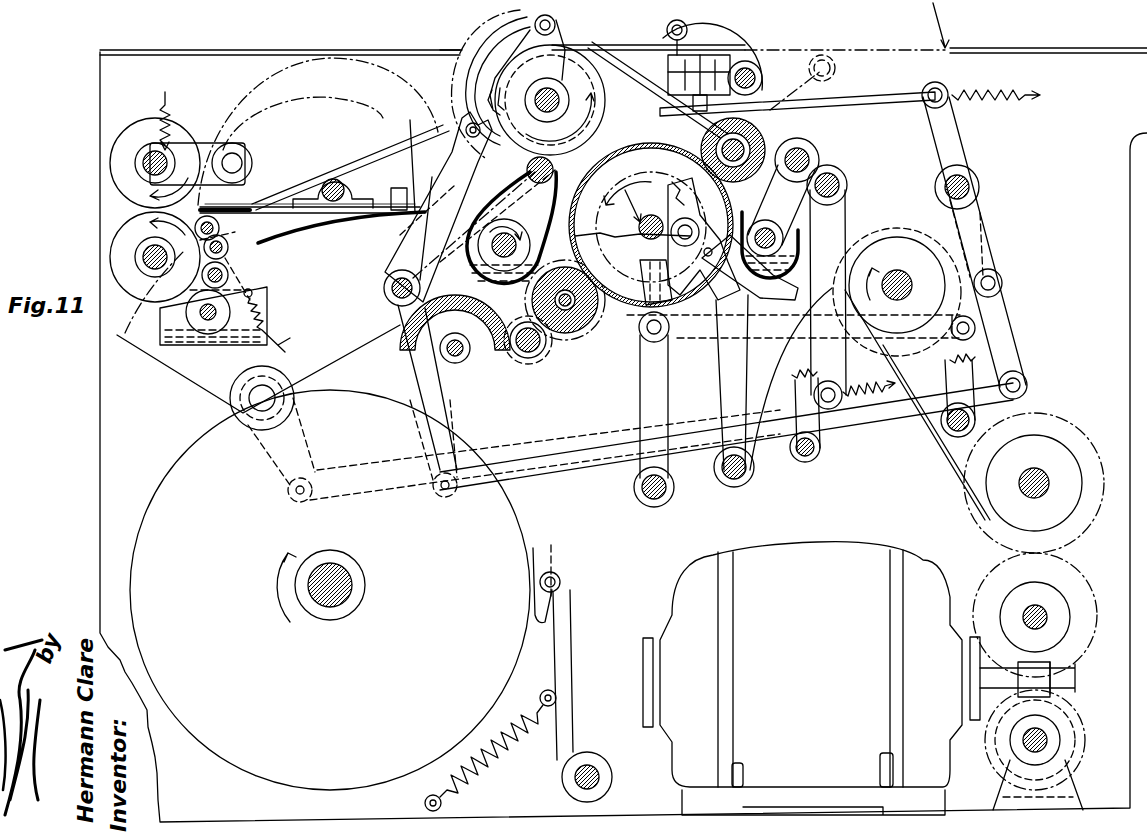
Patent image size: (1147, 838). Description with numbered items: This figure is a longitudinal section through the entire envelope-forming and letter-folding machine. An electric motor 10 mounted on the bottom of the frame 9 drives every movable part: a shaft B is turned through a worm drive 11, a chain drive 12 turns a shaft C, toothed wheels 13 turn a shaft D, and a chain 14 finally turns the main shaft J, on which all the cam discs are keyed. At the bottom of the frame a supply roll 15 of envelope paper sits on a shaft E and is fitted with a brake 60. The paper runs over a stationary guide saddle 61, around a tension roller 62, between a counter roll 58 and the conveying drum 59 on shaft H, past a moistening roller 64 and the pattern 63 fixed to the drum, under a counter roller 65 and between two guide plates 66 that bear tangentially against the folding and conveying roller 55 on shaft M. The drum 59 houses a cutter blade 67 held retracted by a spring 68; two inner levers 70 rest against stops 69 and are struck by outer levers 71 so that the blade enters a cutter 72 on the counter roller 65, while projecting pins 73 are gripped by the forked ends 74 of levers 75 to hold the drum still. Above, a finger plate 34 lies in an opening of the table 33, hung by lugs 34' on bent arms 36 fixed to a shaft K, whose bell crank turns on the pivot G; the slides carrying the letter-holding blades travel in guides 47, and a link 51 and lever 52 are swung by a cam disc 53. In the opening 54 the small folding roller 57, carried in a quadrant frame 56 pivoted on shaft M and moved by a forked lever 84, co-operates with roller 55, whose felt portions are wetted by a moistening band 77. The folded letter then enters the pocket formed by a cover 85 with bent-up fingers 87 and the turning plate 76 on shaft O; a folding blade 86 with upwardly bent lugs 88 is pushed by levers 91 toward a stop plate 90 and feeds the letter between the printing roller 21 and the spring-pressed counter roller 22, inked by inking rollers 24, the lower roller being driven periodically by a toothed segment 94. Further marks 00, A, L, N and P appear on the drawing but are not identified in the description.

The frame 9 is at (1130, 272).
The electric motor 10 is at (838, 545).
The worm drive 11 is at (1052, 668).
The chain drive 12 is at (1068, 640).
The toothed wheels 13 is at (1075, 548).
The chain 14 is at (1020, 410).
The supply roll 15 is at (150, 497).
The printing roller 21 is at (125, 228).
The counter roller 22 is at (150, 120).
The inking rollers 24 is at (233, 235).
The table 33 is at (410, 50).
The finger plate 34 is at (847, 26).
The lugs 34' is at (648, 32).
The bent arms 36 is at (765, 40).
The guides 47 is at (668, 66).
The link 51 is at (795, 112).
The lever 52 is at (962, 140).
The cam disc 53 is at (918, 235).
The opening 54 is at (455, 48).
The folding and conveying roller 55 is at (598, 113).
The quadrant frame 56 is at (492, 48).
The folding roller 57 is at (533, 22).
The counter roll 58 is at (588, 318).
The conveying drum 59 is at (632, 150).
The brake 60 is at (556, 568).
The stationary guide saddle 61 is at (466, 350).
The tension roller 62 is at (528, 358).
The pattern 63 is at (768, 205).
The moistening roller 64 is at (770, 224).
The counter roller 65 is at (800, 148).
The guide plates 66 is at (690, 90).
The cutter blade 67 is at (675, 180).
The spring 68 is at (652, 213).
The stops 69 is at (700, 237).
The levers 70 is at (655, 240).
The levers 71 is at (740, 298).
The cutter 72 is at (705, 148).
The projecting pins 73 is at (648, 270).
The forked ends 74 is at (590, 305).
The levers 75 is at (668, 382).
The turning plate 76 is at (395, 186).
The moistening band 77 is at (486, 292).
The forked lever 84 is at (452, 182).
The cover 85 is at (345, 223).
The folding blade 86 is at (372, 216).
The bent up fingers 87 is at (415, 142).
The upwardly bent lugs 88 is at (400, 237).
The stop plate 90 is at (200, 205).
The levers 91 is at (431, 186).
The toothed segment 94 is at (178, 368).
The stop 00 is at (372, 348).
The shaft A is at (1075, 680).
The shaft B is at (1050, 740).
The shaft C is at (1035, 617).
The shaft D is at (1050, 485).
The shaft E is at (352, 585).
The pivot G is at (979, 187).
The shaft H is at (651, 227).
The main shaft J is at (897, 285).
The shaft K is at (762, 78).
The pivot L is at (383, 290).
The shaft M is at (535, 92).
The pivot N is at (963, 395).
The shaft O is at (346, 190).
The pivot P is at (820, 447).